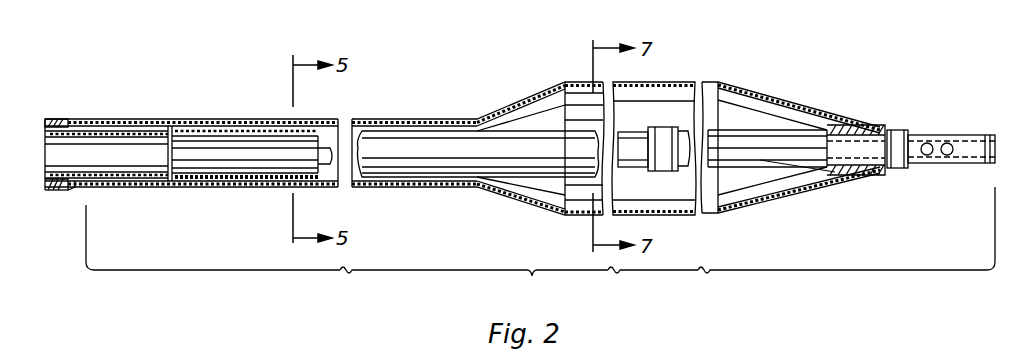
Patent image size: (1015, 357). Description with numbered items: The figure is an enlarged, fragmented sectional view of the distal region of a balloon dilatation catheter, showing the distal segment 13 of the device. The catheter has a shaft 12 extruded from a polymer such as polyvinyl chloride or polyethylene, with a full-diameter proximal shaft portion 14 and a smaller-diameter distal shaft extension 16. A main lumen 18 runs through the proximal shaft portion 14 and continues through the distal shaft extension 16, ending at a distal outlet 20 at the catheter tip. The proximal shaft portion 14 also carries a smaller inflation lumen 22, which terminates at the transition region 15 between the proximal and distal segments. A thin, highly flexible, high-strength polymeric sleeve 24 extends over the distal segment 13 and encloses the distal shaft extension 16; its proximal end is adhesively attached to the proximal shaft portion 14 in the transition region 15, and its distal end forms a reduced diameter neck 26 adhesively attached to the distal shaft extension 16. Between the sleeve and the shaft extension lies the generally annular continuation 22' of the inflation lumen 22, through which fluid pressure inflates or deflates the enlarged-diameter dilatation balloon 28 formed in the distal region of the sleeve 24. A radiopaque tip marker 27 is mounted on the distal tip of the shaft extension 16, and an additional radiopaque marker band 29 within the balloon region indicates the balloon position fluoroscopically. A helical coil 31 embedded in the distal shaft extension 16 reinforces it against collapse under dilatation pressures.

The shaft 12 is at (50, 119).
The distal segment 13 is at (540, 244).
The proximal shaft portion 14 is at (62, 190).
The transition region 15 is at (92, 119).
The distal shaft extension 16 is at (283, 180).
The main lumen 18 is at (143, 168).
The distal outlet 20 is at (980, 145).
The inflation lumen 22 is at (108, 133).
The annular continuation of the inflation lumen 22' is at (391, 135).
The sleeve 24 is at (412, 119).
The reduced diameter neck 26 is at (863, 176).
The tip marker 27 is at (897, 169).
The dilatation balloon 28 is at (575, 216).
The radiopaque marker band 29 is at (662, 171).
The helical coil 31 is at (268, 180).